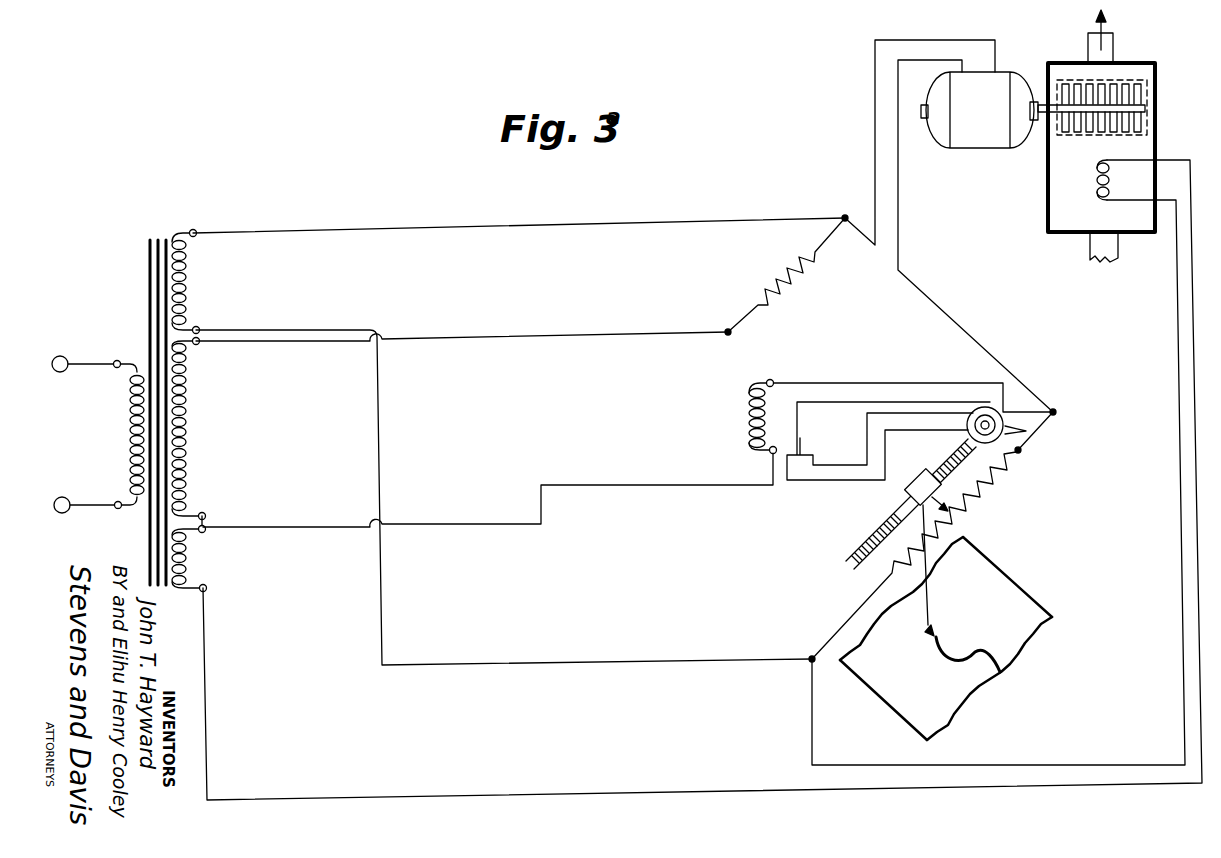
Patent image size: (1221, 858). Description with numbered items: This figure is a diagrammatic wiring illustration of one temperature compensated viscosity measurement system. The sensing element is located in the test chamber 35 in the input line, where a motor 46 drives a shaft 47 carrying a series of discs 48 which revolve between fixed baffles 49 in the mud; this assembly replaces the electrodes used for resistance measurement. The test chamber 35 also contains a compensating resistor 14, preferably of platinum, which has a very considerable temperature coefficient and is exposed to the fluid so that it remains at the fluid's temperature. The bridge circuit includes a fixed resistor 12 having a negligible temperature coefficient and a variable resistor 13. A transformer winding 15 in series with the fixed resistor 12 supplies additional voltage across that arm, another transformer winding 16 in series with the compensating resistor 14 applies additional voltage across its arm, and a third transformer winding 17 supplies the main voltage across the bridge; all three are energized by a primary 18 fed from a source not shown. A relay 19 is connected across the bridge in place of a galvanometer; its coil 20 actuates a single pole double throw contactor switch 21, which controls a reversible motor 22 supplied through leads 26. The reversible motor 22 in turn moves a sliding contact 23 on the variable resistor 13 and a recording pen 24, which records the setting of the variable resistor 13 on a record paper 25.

The fixed resistor 12 is at (786, 292).
The variable resistor 13 is at (985, 497).
The compensating resistor 14 is at (1097, 176).
The transformer winding 15 is at (187, 442).
The transformer winding 16 is at (188, 573).
The transformer winding 17 is at (186, 302).
The primary 18 is at (130, 436).
The relay 19 is at (746, 405).
The coil 20 is at (746, 442).
The single pole double throw contactor switch 21 is at (806, 440).
The reversible motor 22 is at (1000, 416).
The sliding contact 23 is at (908, 494).
The recording pen 24 is at (930, 607).
The record paper 25 is at (1030, 600).
The leads 26 is at (1027, 432).
The test chamber 35 is at (1158, 143).
The motor 46 is at (990, 111).
The shaft 47 is at (1145, 108).
The discs 48 is at (1112, 95).
The fixed baffles 49 is at (1095, 128).